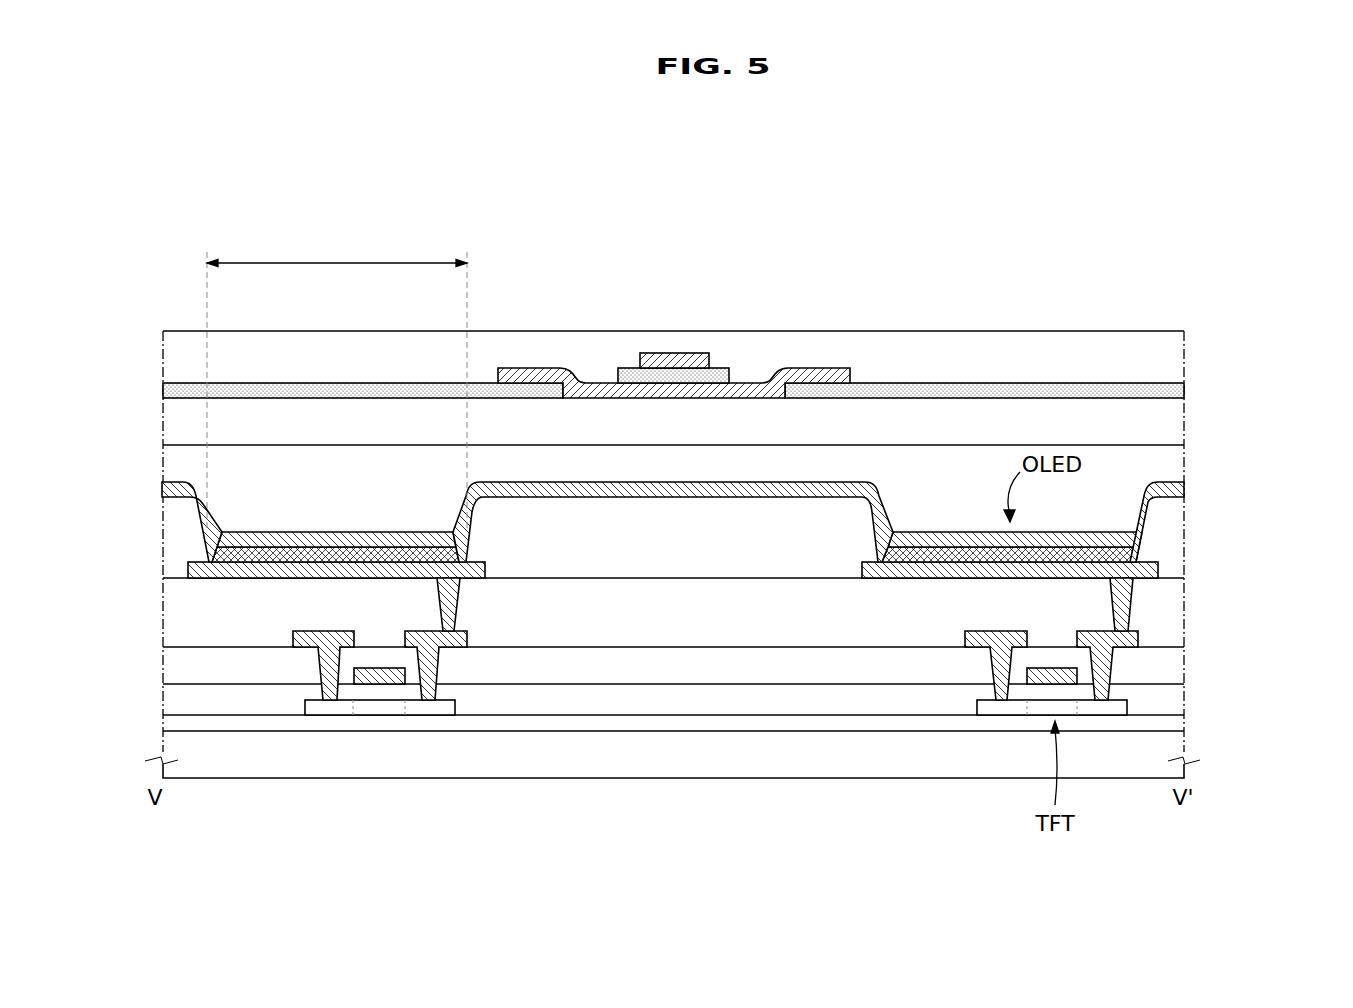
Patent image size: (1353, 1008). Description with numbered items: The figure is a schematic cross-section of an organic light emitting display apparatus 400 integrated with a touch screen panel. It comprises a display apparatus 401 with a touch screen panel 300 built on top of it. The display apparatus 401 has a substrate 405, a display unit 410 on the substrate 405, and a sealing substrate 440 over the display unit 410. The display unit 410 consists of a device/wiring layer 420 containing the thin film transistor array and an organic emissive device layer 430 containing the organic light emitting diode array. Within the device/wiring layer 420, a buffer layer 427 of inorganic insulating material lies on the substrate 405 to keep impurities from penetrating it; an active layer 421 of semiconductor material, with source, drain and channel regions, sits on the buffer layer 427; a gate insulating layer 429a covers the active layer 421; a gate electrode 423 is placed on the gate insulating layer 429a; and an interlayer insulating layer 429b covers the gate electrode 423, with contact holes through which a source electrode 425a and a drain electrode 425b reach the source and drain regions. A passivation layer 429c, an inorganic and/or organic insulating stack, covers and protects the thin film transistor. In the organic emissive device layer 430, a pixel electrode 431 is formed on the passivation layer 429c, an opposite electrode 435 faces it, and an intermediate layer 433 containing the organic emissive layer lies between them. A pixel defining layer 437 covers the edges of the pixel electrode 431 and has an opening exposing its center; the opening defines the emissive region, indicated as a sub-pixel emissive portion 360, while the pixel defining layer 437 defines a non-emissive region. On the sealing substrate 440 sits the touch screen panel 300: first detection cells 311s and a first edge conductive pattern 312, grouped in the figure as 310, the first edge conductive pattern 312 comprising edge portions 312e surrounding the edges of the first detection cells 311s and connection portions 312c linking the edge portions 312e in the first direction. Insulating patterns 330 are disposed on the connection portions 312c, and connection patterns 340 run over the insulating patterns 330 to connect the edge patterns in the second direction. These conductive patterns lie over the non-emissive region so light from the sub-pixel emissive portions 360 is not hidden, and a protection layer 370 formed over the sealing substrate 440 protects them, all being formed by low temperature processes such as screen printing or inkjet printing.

The touch screen panel 300 is at (713, 266).
The inorganic encapsulation layer 310 is at (673, 266).
The first detection cells 311s is at (927, 385).
The first edge conductive pattern 312 is at (682, 294).
The connection portions 312c is at (752, 388).
The edge portions 312e is at (823, 370).
The insulating patterns 330 is at (722, 367).
The connection patterns 340 is at (675, 358).
The sub-pixel emissive portions 360 is at (337, 384).
The protection layer 370 is at (1042, 343).
The organic light emitting display apparatus integrated touch screen panel 400 is at (1155, 219).
The display apparatus 401 is at (150, 400).
The substrate 405 is at (1165, 746).
The display unit 410 is at (1265, 527).
The device/wiring layer 420 is at (1200, 578).
The active layer 421 is at (372, 708).
The gate electrode 423 is at (383, 678).
The source electrode 425a is at (309, 648).
The drain electrode 425b is at (452, 648).
The buffer layer 427 is at (622, 727).
The gate insulating layer 429a is at (684, 707).
The interlayer insulating layer 429b is at (747, 675).
The passivation layer 429c is at (807, 628).
The organic emissive device layer 430 is at (1196, 479).
The pixel electrode 431 is at (862, 568).
The intermediate layer 433 is at (887, 553).
The opposite electrode 435 is at (890, 535).
The pixel defining layer 437 is at (693, 512).
The sealing substrate 440 is at (1175, 424).